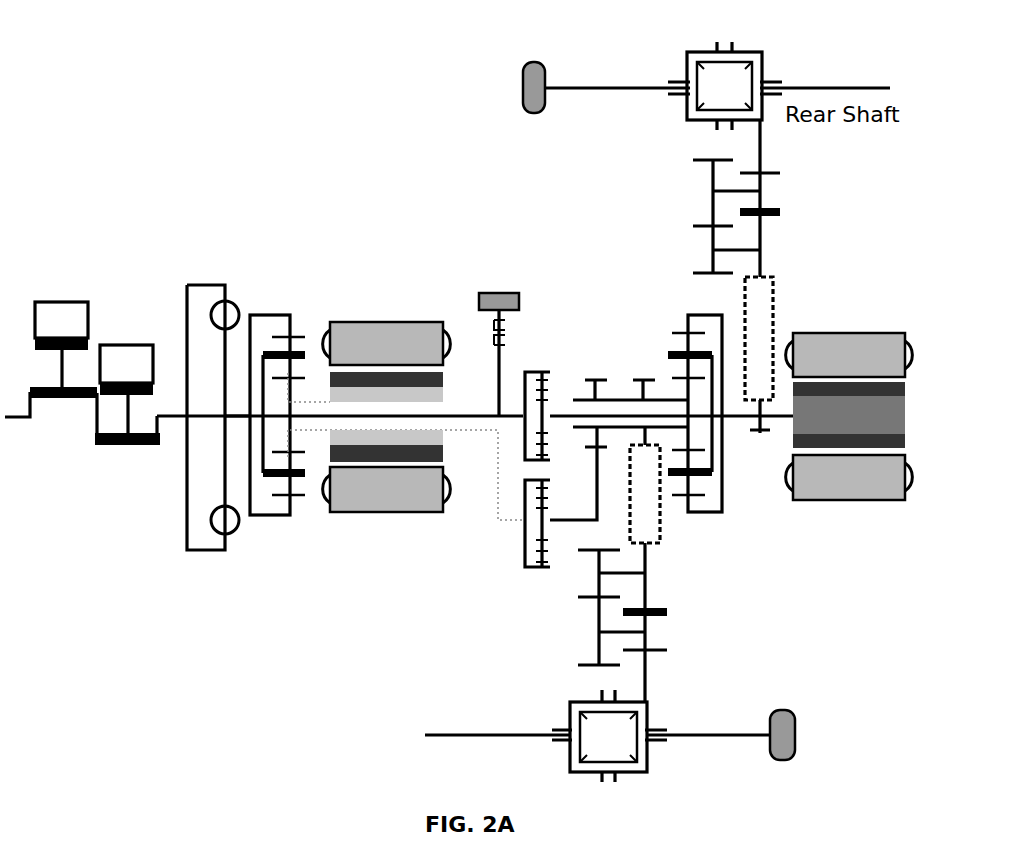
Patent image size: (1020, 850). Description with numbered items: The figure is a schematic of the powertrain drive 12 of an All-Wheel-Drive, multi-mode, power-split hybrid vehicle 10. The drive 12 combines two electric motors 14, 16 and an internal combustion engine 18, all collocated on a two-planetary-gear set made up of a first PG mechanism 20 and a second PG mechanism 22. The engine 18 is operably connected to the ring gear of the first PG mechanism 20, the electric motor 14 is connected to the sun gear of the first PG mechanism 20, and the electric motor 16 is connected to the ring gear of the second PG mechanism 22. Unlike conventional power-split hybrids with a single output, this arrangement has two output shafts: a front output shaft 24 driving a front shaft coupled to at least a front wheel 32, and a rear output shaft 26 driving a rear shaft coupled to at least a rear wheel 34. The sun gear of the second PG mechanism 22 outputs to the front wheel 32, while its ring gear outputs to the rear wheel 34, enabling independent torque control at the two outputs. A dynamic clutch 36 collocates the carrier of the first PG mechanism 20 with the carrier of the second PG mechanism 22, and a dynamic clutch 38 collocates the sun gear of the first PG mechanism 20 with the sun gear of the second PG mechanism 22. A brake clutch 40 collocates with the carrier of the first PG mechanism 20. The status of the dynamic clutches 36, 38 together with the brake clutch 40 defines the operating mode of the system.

The hybrid vehicle 10 is at (379, 98).
The drive 12 is at (489, 208).
The electric motor 14 is at (374, 320).
The electric motor 16 is at (845, 330).
The internal combustion engine 18 is at (136, 236).
The first PG mechanism 20 is at (255, 285).
The second PG mechanism 22 is at (678, 308).
The front output shaft 24 is at (690, 619).
The rear output shaft 26 is at (672, 193).
The front wheel 32 is at (808, 715).
The rear wheel 34 is at (548, 73).
The dynamic clutch 36 is at (540, 345).
The dynamic clutch 38 is at (540, 600).
The brake clutch 40 is at (500, 290).